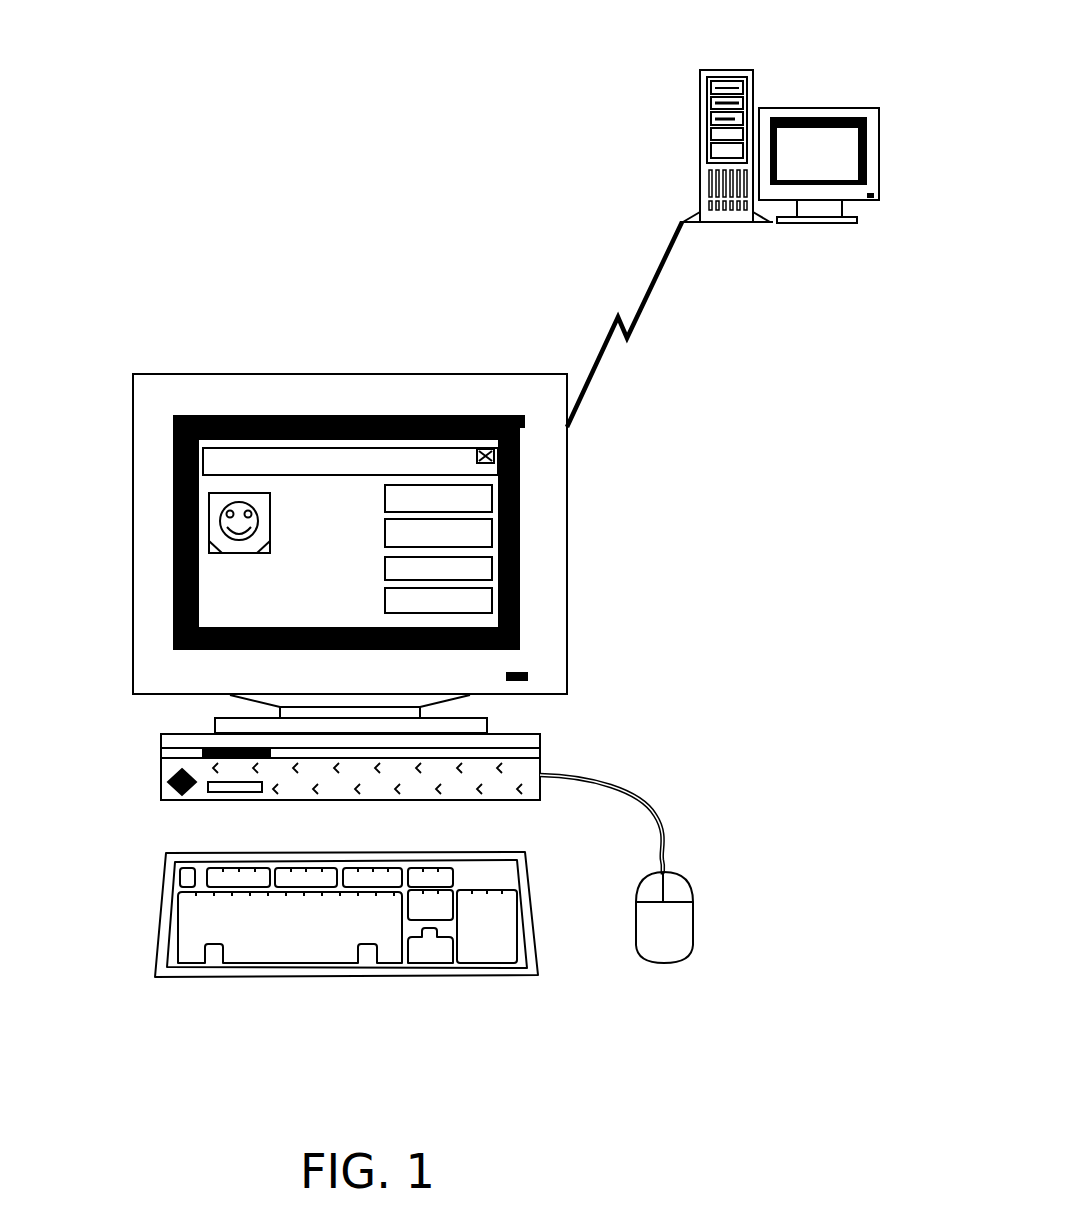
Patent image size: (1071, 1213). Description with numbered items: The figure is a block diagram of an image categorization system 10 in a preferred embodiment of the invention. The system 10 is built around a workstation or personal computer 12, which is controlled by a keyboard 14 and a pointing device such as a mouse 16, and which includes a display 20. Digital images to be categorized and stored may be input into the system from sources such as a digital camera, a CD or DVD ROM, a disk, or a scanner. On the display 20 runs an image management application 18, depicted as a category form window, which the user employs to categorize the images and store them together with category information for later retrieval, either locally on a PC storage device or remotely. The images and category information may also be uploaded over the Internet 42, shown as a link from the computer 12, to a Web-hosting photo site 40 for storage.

The system 10 is at (68, 339).
The personal computer 12 is at (431, 774).
The keyboard 14 is at (290, 943).
The mouse 16 is at (674, 893).
The image management application 18 is at (283, 523).
The display 20 is at (375, 553).
The Web-hosting photo site 40 is at (806, 139).
The Internet 42 is at (623, 317).